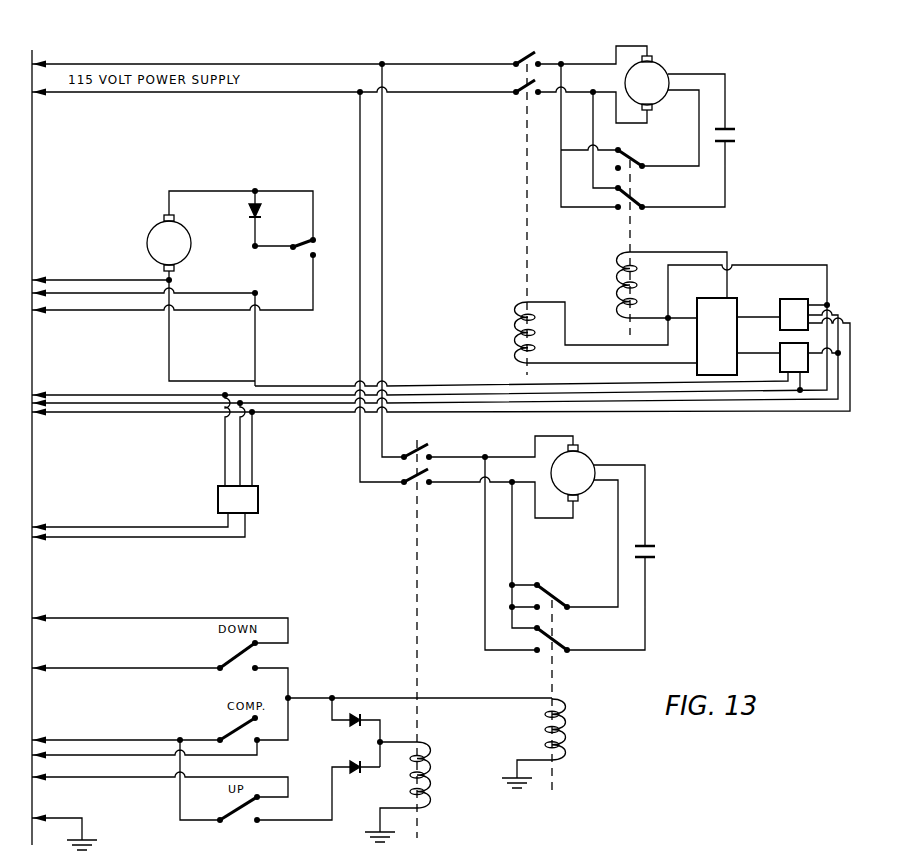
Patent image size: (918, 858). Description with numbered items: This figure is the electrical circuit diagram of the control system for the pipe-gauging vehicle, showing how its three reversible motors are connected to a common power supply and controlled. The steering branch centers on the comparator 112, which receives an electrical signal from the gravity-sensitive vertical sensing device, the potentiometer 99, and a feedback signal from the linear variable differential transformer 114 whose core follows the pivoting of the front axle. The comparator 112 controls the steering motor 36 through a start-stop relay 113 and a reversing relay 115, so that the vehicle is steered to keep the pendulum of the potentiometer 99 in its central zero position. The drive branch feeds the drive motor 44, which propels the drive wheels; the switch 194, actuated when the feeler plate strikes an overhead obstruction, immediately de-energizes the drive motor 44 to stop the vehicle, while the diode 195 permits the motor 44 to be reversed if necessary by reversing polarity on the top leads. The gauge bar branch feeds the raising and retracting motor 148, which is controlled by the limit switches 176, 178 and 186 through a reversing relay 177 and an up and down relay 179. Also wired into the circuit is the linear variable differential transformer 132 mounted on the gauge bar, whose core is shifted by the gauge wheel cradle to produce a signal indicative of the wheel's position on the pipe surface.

The electric motor 36 is at (663, 70).
The reversible electric motor 44 is at (147, 241).
The diode 195 is at (249, 212).
The switch 194 is at (301, 252).
The reversing relay 115 is at (621, 267).
The start-stop relay 113 is at (517, 324).
The comparator 112 is at (727, 346).
The linear variable differential transformer 114 is at (803, 324).
The potentiometer 99 is at (801, 367).
The reversible electric motor 148 is at (584, 460).
The linear variable differential transformer 132 is at (259, 501).
The limit switch 186 is at (238, 661).
The limit switch 178 is at (239, 730).
The limit switch 176 is at (236, 814).
The up and down relay 179 is at (433, 760).
The reversing relay 177 is at (565, 724).